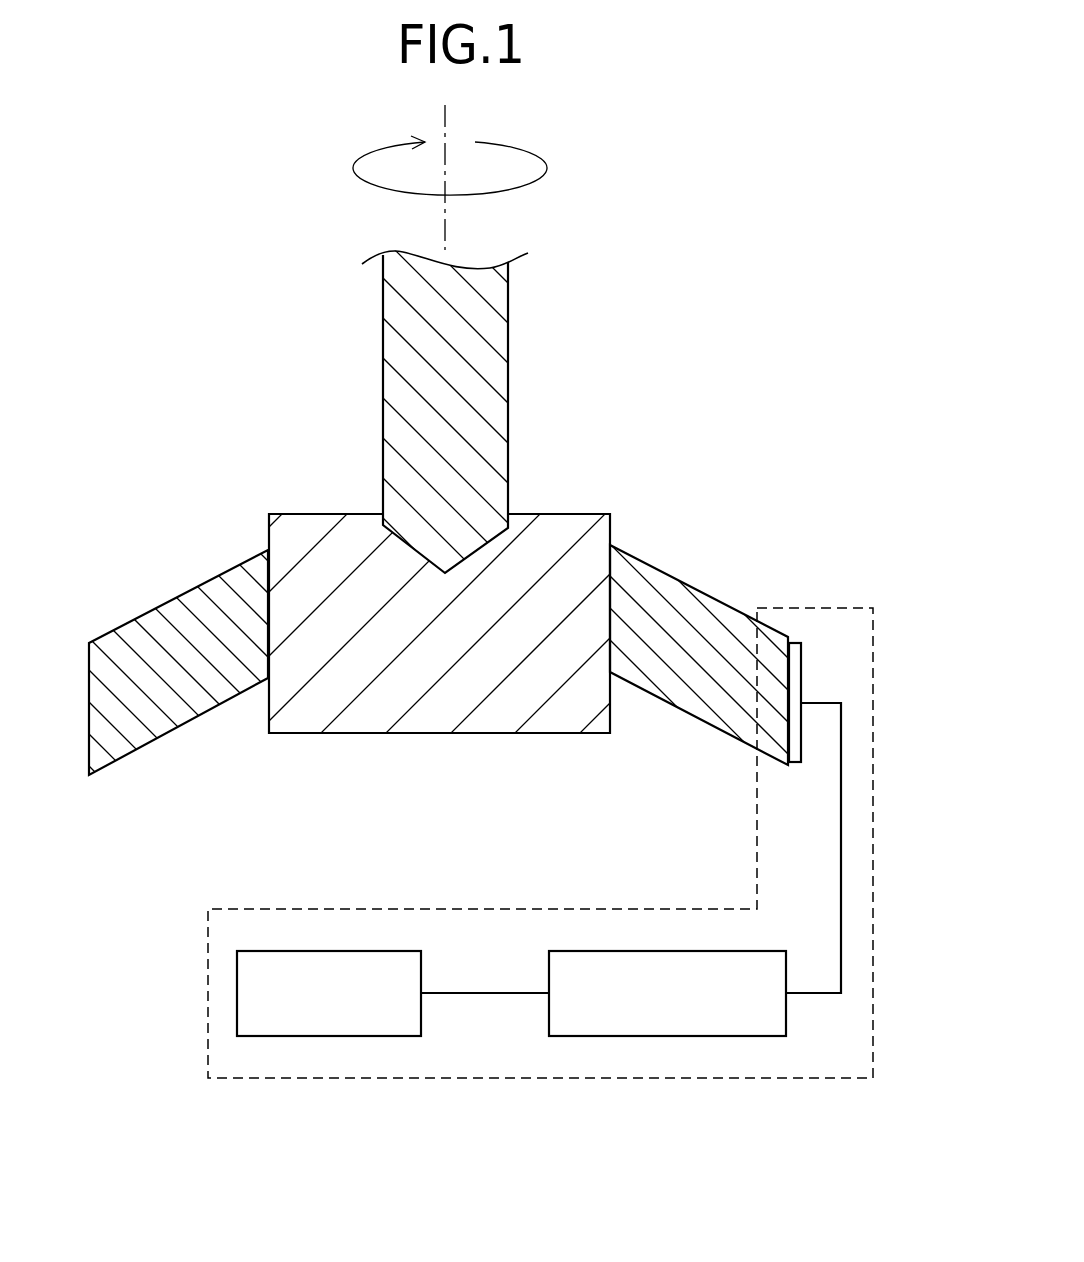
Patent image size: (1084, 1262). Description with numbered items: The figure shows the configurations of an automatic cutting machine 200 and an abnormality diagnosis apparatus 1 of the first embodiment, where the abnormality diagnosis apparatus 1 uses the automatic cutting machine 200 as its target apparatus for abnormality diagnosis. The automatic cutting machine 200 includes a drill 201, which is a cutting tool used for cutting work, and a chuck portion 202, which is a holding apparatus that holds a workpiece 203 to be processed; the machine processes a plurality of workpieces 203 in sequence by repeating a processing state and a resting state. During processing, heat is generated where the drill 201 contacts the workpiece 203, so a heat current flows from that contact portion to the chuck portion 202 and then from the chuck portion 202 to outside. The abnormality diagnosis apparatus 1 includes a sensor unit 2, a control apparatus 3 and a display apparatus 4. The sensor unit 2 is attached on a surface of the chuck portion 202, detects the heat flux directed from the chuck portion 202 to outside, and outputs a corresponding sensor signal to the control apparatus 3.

The abnormality diagnosis apparatus 1 is at (560, 889).
The sensor unit 2 is at (803, 663).
The control apparatus 3 is at (672, 1036).
The display apparatus 4 is at (335, 1036).
The automatic cutting machine 200 is at (465, 452).
The drill 201 is at (508, 372).
The chuck portion 202 is at (668, 573).
The workpiece 203 is at (566, 513).